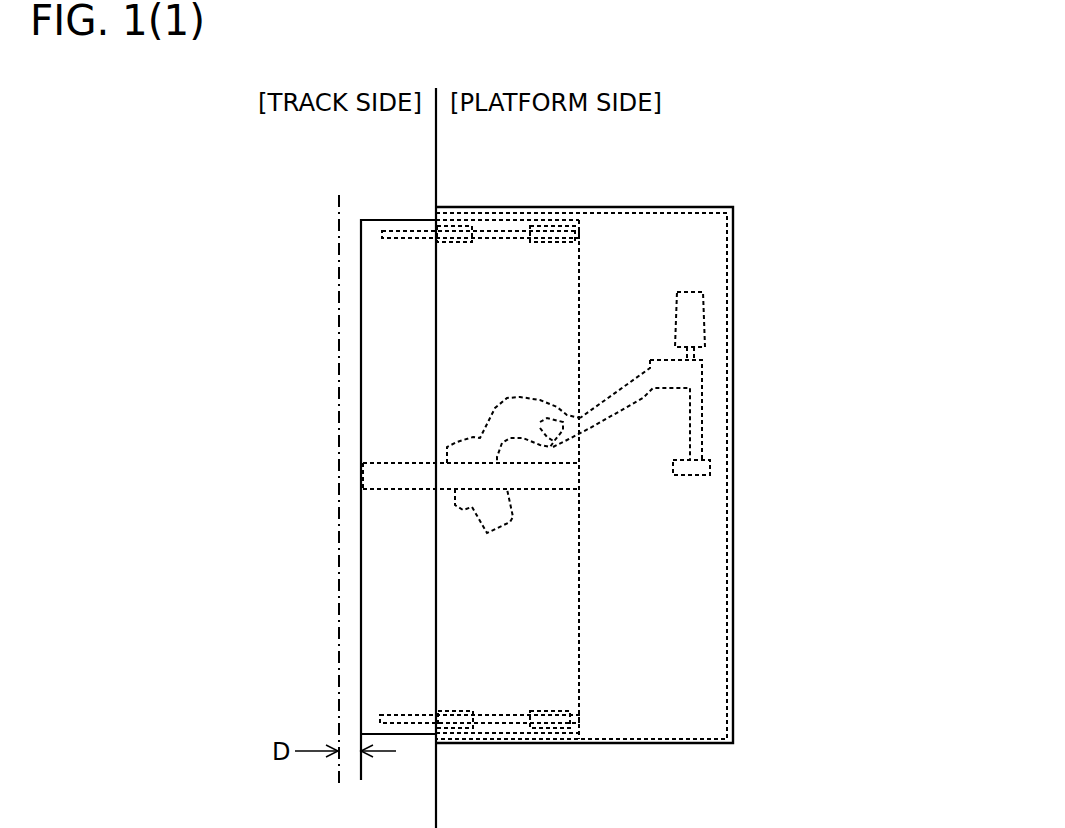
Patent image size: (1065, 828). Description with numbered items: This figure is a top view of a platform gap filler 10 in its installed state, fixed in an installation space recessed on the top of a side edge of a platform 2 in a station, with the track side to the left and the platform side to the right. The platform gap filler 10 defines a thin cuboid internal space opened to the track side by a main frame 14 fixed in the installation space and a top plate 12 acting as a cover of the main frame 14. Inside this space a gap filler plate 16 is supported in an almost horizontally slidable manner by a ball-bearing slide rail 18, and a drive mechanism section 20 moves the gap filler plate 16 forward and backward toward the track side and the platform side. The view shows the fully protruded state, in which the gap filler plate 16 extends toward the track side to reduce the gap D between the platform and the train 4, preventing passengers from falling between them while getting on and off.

The platform 2 is at (478, 164).
The train 4 is at (340, 584).
The platform gap filler 10 is at (699, 182).
The top plate 12 is at (662, 601).
The main frame 14 is at (730, 263).
The gap filler plate 16 is at (368, 342).
The ball-bearing slide rail 18 is at (512, 232).
The drive mechanism section 20 is at (700, 360).